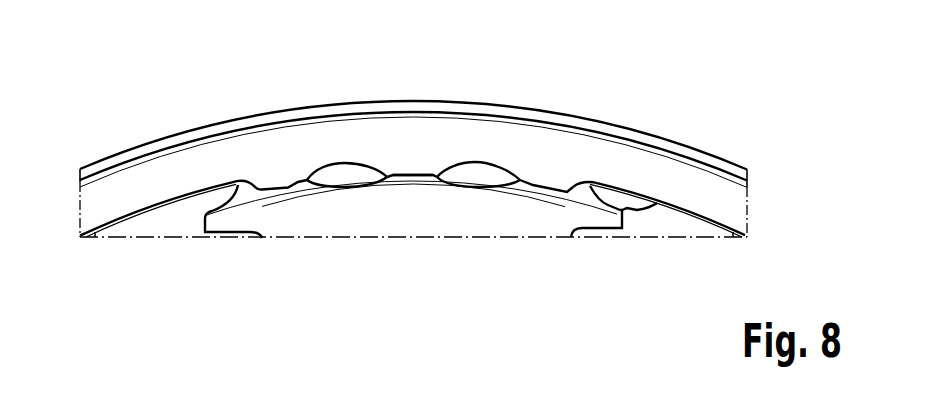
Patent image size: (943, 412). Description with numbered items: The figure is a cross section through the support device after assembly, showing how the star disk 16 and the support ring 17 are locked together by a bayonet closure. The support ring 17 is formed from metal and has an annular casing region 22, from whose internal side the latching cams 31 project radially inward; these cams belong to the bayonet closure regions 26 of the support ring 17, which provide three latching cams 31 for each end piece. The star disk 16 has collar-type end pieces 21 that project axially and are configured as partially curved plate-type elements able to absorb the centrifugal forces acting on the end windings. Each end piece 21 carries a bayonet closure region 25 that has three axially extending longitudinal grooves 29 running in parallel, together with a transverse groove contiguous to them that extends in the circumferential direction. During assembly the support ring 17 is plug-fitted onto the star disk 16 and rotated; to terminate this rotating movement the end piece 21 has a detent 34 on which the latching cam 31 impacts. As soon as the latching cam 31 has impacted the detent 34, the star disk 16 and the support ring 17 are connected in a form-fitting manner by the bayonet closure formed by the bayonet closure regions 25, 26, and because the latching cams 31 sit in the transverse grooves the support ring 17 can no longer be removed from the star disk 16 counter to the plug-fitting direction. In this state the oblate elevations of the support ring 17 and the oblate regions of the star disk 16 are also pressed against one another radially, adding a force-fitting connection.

The star disk 16 is at (621, 273).
The support ring 17 is at (703, 151).
The end pieces 21 is at (666, 232).
The casing region 22 is at (654, 146).
The bayonet closure regions of the end pieces 25 is at (480, 218).
The bayonet closure regions of the support ring 26 is at (413, 143).
The longitudinal grooves 29 is at (345, 186).
The latching cams 31 is at (283, 190).
The detent 34 is at (214, 180).